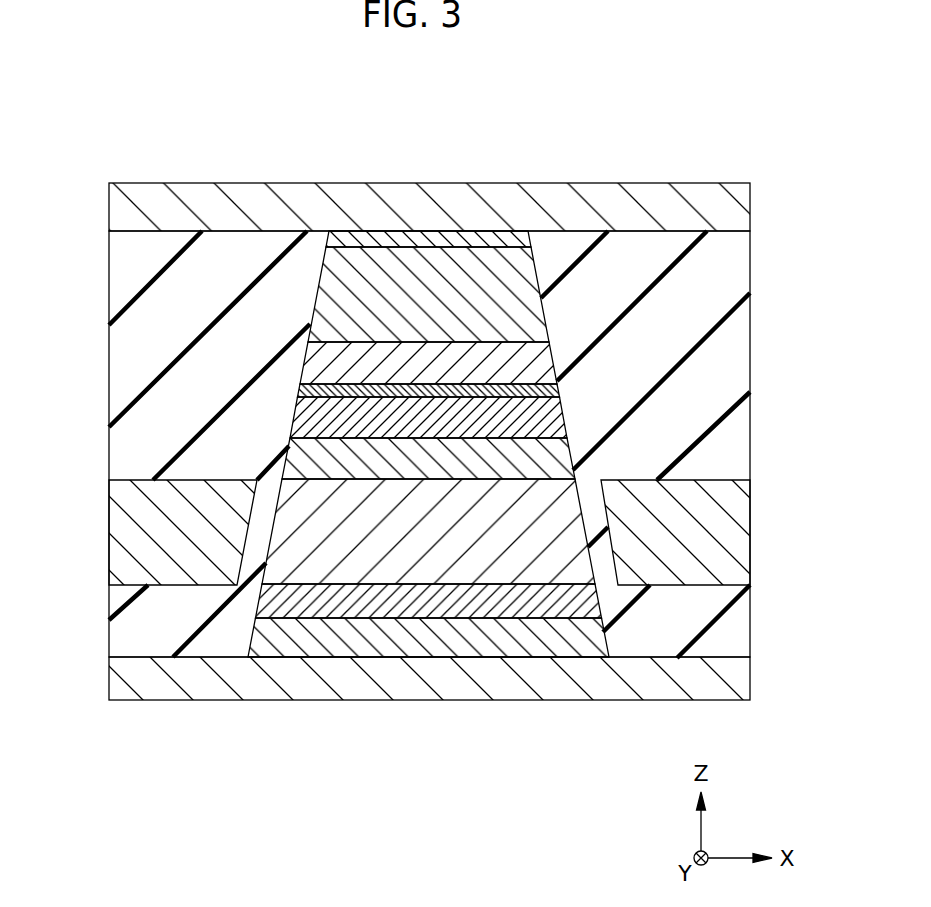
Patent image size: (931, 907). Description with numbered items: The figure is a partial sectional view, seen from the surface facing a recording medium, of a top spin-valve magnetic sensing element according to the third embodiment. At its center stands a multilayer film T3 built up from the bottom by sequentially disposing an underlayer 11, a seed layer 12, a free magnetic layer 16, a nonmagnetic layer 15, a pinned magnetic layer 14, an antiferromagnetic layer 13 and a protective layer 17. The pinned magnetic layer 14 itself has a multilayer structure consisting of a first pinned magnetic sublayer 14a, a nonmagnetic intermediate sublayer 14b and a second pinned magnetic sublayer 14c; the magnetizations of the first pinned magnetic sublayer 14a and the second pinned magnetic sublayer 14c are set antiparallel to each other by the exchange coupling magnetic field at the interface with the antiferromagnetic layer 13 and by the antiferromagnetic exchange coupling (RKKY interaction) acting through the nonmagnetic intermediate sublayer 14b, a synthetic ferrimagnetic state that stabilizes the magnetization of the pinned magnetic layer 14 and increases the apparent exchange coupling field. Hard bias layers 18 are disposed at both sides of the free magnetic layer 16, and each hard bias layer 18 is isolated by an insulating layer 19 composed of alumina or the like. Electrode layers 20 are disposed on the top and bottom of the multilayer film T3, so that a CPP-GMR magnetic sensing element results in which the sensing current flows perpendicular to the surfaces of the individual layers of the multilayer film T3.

The underlayer 11 is at (572, 643).
The seed layer 12 is at (502, 605).
The antiferromagnetic layer 13 is at (341, 248).
The pinned magnetic layer 14 is at (446, 262).
The first pinned magnetic sublayer 14a is at (533, 357).
The nonmagnetic intermediate sublayer 14b is at (511, 388).
The second pinned magnetic sublayer 14c is at (470, 417).
The nonmagnetic layer 15 is at (410, 457).
The free magnetic layer 16 is at (312, 557).
The protective layer 17 is at (388, 242).
The hard bias layer 18 is at (128, 533).
The insulating layer 19 is at (128, 373).
The electrode layer 20 is at (741, 208).
The multilayer film T3 is at (358, 222).